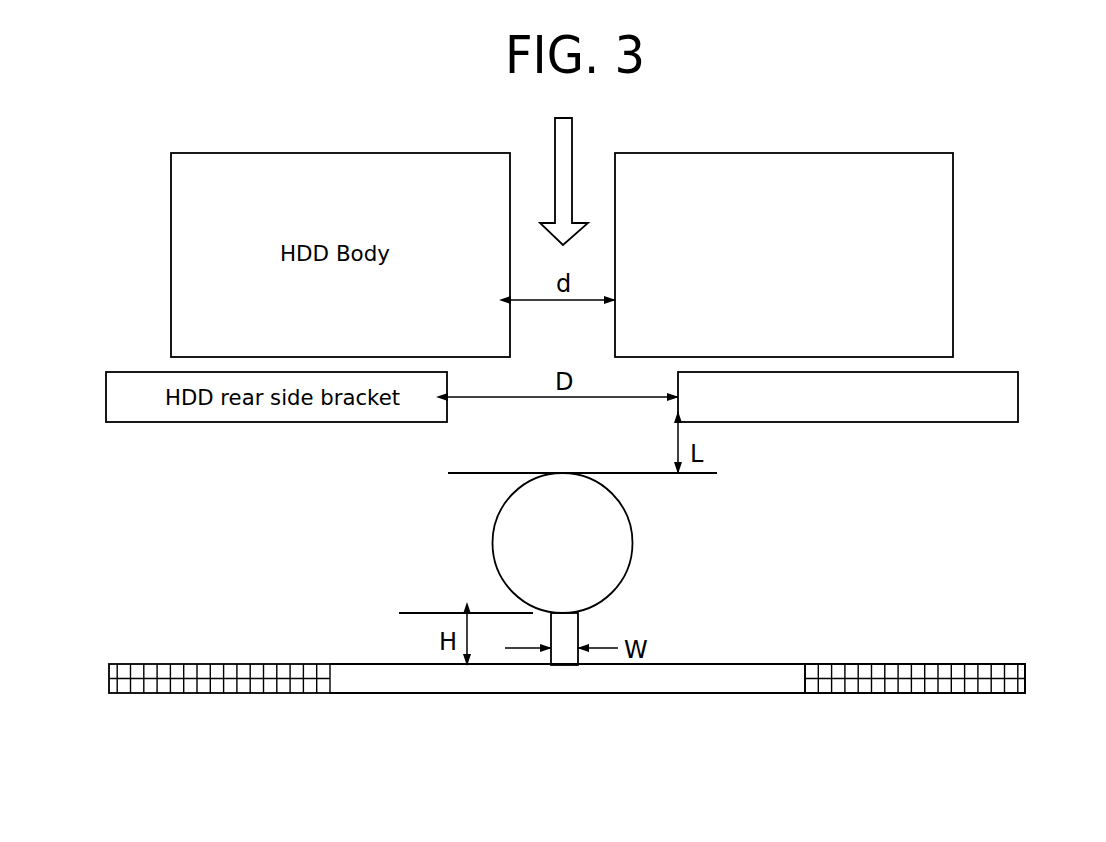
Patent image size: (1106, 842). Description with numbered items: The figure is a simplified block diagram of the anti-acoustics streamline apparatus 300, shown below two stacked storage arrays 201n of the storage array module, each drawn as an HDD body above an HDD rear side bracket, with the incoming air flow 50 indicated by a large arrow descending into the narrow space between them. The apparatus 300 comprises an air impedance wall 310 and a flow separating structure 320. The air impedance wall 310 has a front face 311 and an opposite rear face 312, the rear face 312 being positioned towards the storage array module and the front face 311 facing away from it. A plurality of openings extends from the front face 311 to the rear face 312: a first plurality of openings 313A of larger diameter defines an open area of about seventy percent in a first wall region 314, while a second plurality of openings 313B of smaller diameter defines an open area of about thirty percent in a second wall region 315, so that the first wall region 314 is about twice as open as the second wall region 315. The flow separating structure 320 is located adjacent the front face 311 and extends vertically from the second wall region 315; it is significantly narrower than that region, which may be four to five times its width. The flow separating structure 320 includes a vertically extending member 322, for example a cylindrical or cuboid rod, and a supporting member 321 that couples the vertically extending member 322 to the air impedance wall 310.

The air flow 50 is at (575, 134).
The storage array 201n is at (826, 153).
The anti-acoustics streamline apparatus 300 is at (937, 580).
The air impedance wall 310 is at (1026, 680).
The front face 311 is at (996, 664).
The rear face 312 is at (1000, 693).
The first plurality of openings 313A is at (870, 688).
The second plurality of openings 313B is at (347, 686).
The first wall region 314 is at (216, 694).
The second wall region 315 is at (500, 695).
The flow separating structure 320 is at (554, 569).
The supporting member 321 is at (568, 623).
The vertically extending member 322 is at (613, 559).